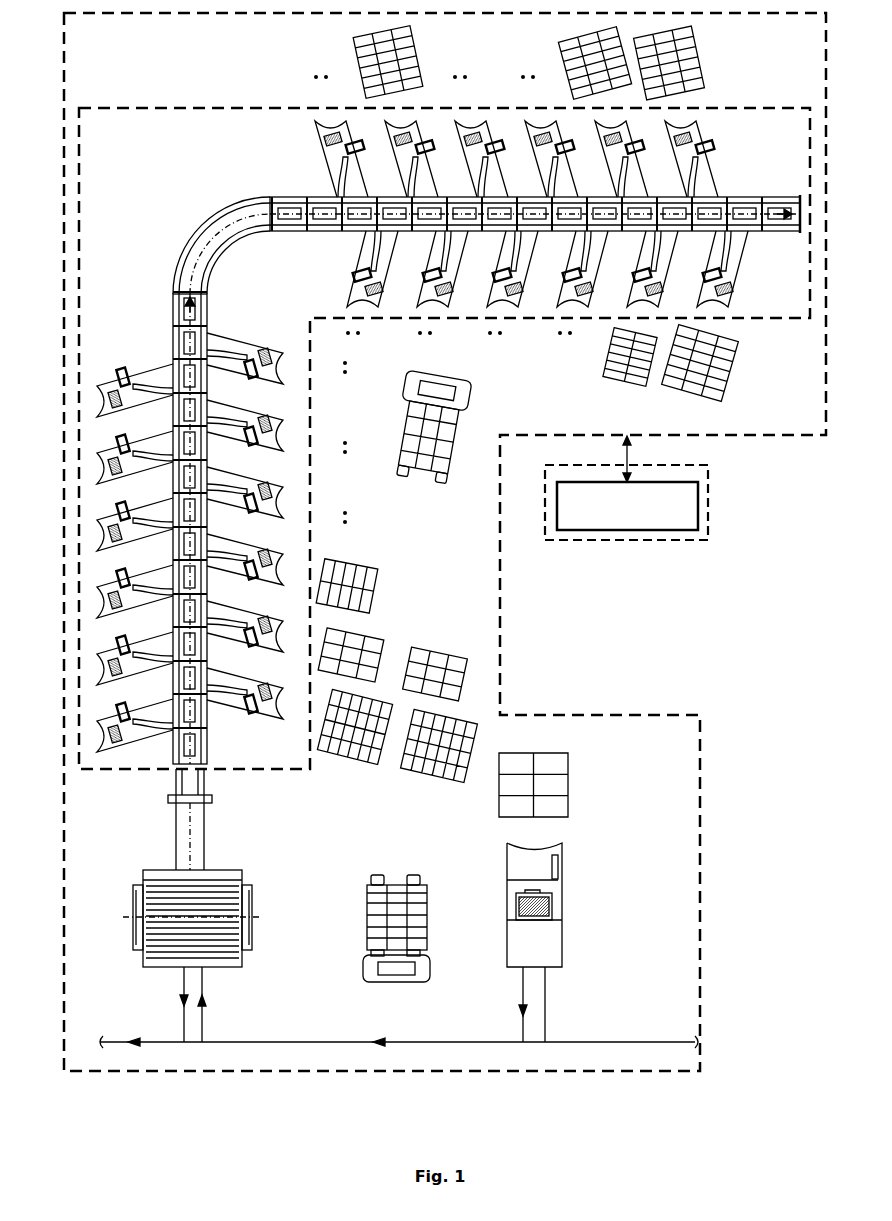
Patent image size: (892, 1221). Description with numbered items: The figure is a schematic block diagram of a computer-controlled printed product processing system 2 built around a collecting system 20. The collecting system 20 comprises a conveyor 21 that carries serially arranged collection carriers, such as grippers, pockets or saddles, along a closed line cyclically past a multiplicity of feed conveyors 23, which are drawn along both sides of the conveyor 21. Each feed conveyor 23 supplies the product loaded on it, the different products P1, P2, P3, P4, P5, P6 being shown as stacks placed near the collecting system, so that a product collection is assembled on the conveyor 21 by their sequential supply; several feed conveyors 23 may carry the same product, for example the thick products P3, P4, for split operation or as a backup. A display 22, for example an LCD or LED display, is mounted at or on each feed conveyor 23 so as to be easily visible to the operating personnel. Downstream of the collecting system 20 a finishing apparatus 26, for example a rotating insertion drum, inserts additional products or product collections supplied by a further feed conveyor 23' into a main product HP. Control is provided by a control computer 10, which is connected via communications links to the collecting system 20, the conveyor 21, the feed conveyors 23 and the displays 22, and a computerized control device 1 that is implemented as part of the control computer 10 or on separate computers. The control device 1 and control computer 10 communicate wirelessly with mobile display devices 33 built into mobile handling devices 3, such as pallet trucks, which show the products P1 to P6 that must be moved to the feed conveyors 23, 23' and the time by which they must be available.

The control device 1 is at (563, 520).
The printed product processing system 2 is at (152, 1086).
The mobile handling device 3 is at (390, 400).
The control computer 10 is at (709, 498).
The collecting system 20 is at (273, 776).
The conveyor 21 is at (198, 232).
The display 22 is at (428, 436).
The feed conveyor 23 is at (422, 436).
The feed conveyor 23' is at (566, 942).
The apparatus for inserting 26 is at (280, 927).
The mobile display device 33 is at (438, 388).
The product P1 is at (375, 752).
The product P2 is at (374, 641).
The product P3 is at (688, 40).
The product P4 is at (358, 41).
The product P5 is at (379, 573).
The product P6 is at (611, 378).
The main product HP is at (560, 783).